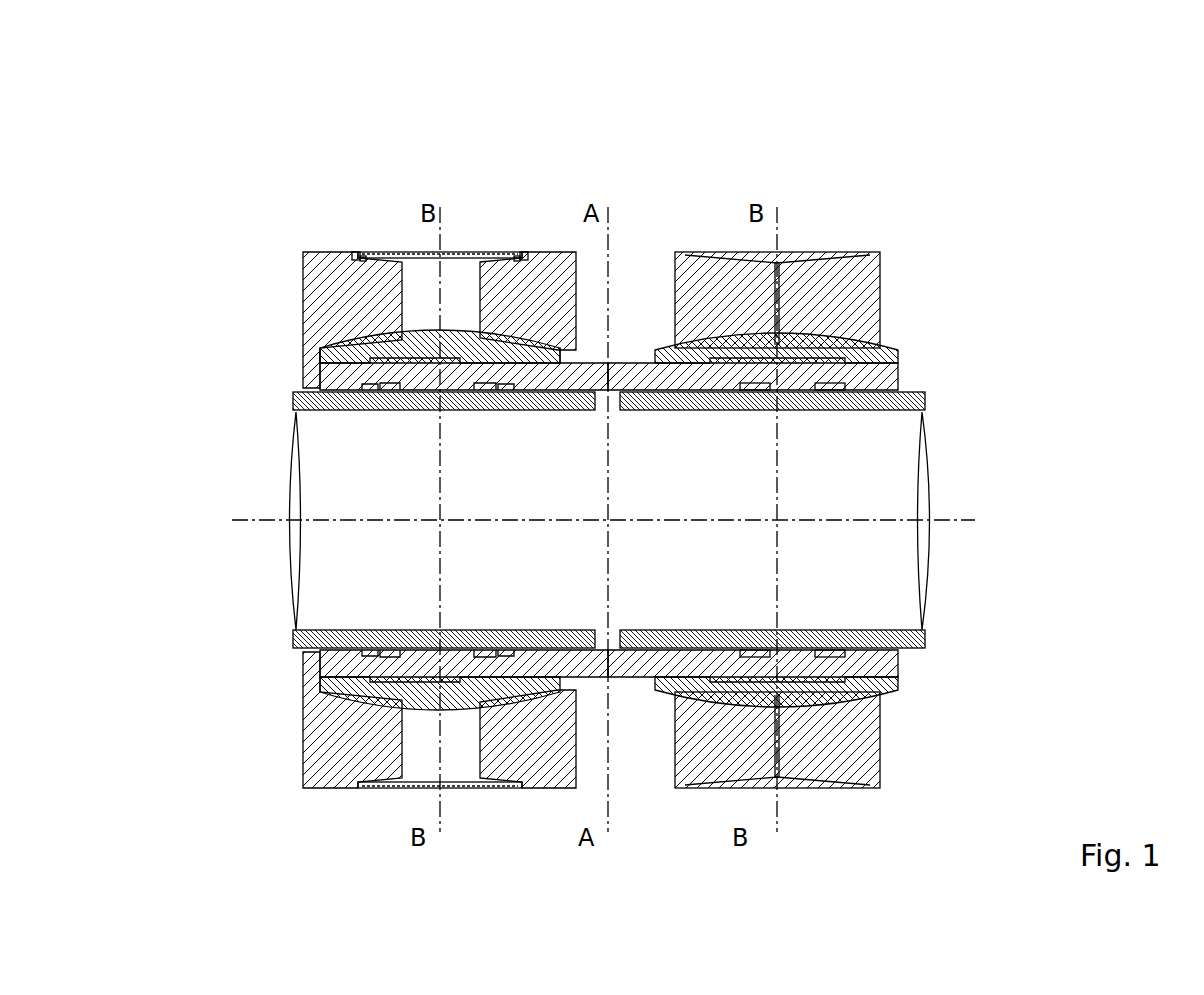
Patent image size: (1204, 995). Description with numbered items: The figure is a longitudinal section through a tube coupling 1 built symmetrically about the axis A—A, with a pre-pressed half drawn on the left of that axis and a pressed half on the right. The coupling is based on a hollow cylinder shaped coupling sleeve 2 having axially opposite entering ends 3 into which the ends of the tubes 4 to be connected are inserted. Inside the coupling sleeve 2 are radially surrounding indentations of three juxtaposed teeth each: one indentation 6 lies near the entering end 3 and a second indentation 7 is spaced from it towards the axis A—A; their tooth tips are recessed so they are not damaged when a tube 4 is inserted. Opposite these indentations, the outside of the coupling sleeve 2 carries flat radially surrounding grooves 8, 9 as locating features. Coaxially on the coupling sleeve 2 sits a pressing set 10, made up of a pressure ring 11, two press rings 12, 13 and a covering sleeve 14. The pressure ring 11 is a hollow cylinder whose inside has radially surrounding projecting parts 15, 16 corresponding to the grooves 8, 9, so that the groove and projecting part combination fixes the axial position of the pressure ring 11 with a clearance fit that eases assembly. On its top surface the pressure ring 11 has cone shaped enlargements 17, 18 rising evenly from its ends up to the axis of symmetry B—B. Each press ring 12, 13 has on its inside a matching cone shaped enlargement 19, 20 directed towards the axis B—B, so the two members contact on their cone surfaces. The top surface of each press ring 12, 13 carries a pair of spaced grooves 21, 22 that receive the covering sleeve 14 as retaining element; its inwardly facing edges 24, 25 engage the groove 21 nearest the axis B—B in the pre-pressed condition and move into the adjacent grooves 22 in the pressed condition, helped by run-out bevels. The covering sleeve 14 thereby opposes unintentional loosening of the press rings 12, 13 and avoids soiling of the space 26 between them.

The tube coupling 1 is at (730, 92).
The pressing set 10 is at (316, 88).
The coupling sleeve 2 is at (900, 382).
The entering end 3 is at (318, 377).
The tube 4 is at (300, 402).
The indentation 6 is at (388, 390).
The second indentation 7 is at (488, 390).
The groove 8 is at (373, 388).
The groove 9 is at (507, 390).
The pressure ring 11 is at (420, 345).
The press ring 12 is at (320, 315).
The press ring 13 is at (528, 287).
The covering sleeve 14 is at (478, 252).
The projecting part 15 is at (392, 672).
The projecting part 16 is at (486, 672).
The cone shaped enlargement 17 is at (353, 340).
The cone shaped enlargement 18 is at (553, 347).
The cone shaped enlargement 19 is at (312, 687).
The cone shaped enlargement 20 is at (567, 690).
The groove 21 is at (363, 257).
The groove 22 is at (328, 255).
The inwardly facing edge 24 is at (352, 199).
The inwardly facing edge 25 is at (503, 199).
The space 26 is at (780, 258).